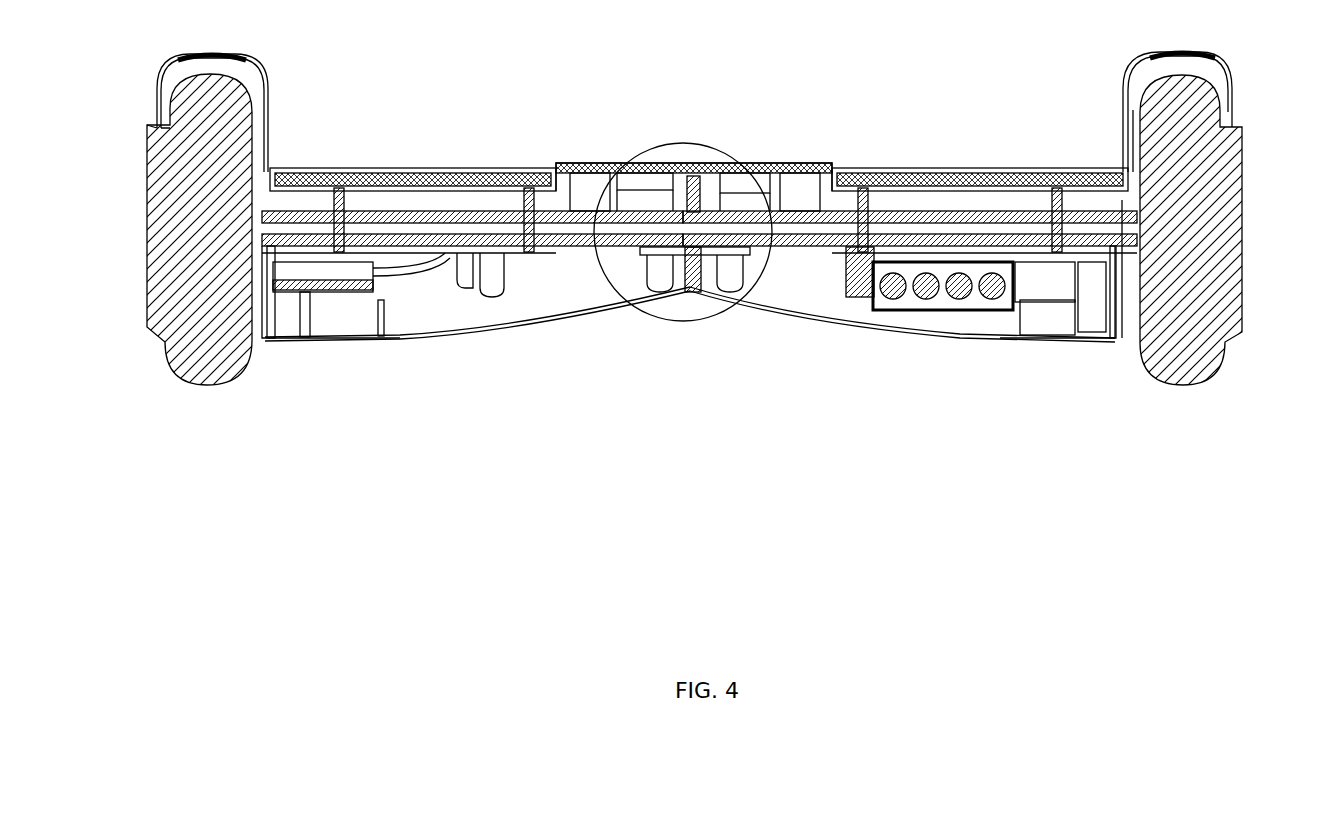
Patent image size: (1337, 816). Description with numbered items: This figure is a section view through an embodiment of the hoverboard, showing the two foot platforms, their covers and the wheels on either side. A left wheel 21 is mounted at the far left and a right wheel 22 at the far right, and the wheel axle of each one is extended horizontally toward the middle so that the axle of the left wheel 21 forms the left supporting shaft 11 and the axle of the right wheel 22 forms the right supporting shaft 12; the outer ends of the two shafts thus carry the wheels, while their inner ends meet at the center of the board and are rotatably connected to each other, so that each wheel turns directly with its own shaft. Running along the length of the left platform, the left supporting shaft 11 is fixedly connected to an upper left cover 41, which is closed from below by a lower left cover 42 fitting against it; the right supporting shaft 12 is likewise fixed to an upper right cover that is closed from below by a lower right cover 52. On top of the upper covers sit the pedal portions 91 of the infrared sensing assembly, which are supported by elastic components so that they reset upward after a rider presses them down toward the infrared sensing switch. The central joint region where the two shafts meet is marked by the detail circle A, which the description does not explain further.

The left supporting shaft 11 is at (555, 239).
The right supporting shaft 12 is at (818, 241).
The left wheel 21 is at (166, 203).
The right wheel 22 is at (1199, 233).
The upper left cover 41 is at (609, 154).
The lower left cover 42 is at (410, 348).
The lower right cover 52 is at (934, 349).
The pedal portion 91 is at (418, 157).
The detail area A is at (674, 335).